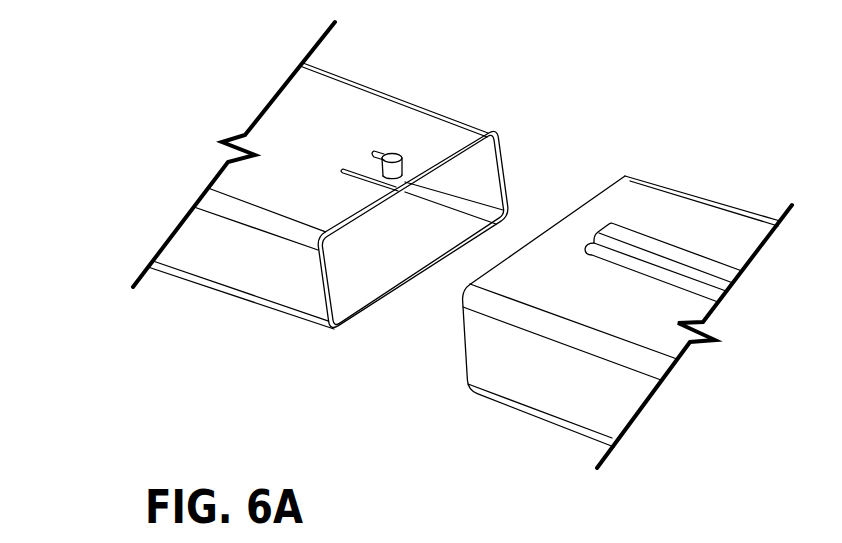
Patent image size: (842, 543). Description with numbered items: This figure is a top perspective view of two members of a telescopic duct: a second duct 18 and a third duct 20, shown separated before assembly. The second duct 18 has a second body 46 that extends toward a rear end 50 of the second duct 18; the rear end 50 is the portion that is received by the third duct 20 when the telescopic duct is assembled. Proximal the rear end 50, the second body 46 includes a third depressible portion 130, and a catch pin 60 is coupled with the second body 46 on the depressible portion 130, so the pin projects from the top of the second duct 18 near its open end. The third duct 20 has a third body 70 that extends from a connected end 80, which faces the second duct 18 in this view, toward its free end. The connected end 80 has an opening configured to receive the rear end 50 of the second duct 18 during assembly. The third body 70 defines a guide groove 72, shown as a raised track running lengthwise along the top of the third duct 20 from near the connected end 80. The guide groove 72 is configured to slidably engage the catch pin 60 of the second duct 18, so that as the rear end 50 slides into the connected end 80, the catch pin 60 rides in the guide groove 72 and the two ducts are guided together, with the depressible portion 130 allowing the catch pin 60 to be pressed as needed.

The second duct 18 is at (342, 197).
The third duct 20 is at (626, 279).
The second body 46 is at (310, 205).
The rear end 50 is at (505, 142).
The catch pin 60 is at (402, 155).
The third body 70 is at (601, 277).
The guide groove 72 is at (620, 235).
The connected end 80 is at (585, 212).
The third depressible portion 130 is at (405, 190).